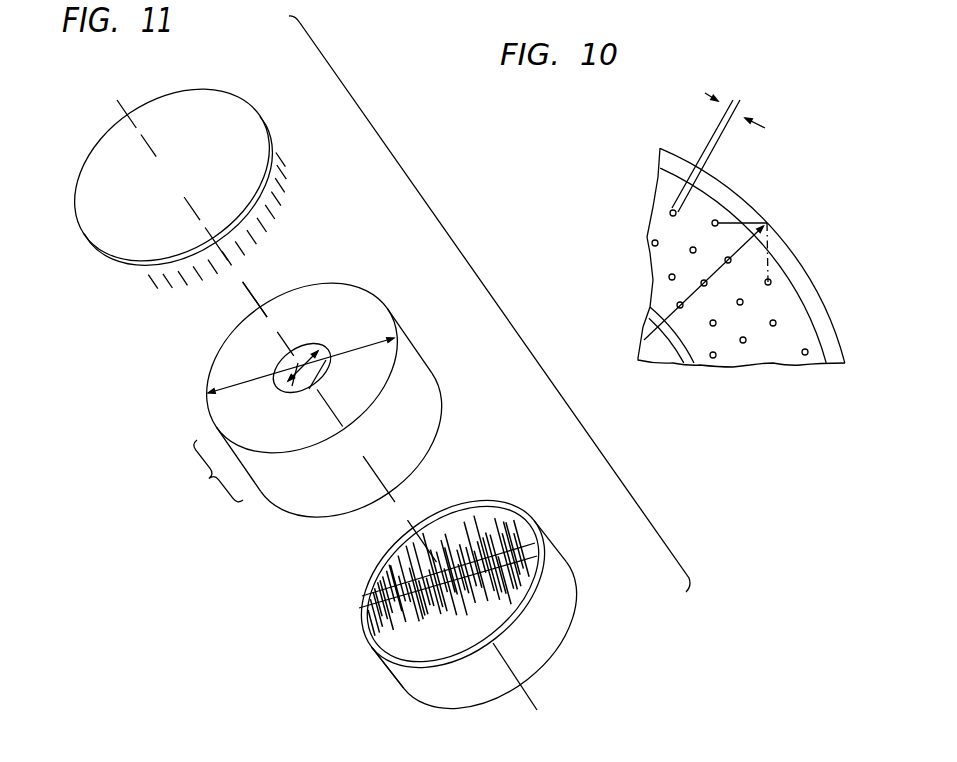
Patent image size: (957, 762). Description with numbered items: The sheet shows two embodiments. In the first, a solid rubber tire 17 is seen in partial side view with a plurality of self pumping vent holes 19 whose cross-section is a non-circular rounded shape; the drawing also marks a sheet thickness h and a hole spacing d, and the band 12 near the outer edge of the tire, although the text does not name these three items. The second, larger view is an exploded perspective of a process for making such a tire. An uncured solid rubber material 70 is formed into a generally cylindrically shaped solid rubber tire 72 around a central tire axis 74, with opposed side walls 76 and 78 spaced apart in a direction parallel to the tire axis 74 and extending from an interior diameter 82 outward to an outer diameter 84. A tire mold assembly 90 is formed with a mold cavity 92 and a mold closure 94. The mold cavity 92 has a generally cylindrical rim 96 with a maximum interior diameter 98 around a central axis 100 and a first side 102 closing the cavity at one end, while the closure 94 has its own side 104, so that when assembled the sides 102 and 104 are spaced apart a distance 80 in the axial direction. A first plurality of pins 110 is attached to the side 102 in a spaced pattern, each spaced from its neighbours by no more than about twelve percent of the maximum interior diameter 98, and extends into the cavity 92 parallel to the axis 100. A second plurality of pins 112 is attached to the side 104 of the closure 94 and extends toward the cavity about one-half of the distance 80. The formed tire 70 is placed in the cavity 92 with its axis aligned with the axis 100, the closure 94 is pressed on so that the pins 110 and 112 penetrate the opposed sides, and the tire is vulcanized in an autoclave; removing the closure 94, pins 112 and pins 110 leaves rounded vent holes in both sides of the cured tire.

In FIG. 10, the peripheral band 12 is at (700, 207).
In FIG. 10, the solid rubber tire 17 is at (743, 229).
In FIG. 10, the self pumping vent holes 19 is at (793, 313).
In FIG. 10, the sheet thickness h is at (744, 119).
In FIG. 10, the perforation spacing d is at (787, 225).
In FIG. 11, the uncured solid rubber material 70 is at (326, 382).
In FIG. 11, the cylindrically shaped solid rubber tire 72 is at (423, 355).
In FIG. 11, the central tire axis 74 is at (240, 285).
In FIG. 11, the side wall 76 is at (430, 434).
In FIG. 11, the side wall 78 is at (337, 290).
In FIG. 11, the distance 80 is at (210, 471).
In FIG. 11, the interior diameter 82 is at (312, 350).
In FIG. 11, the outer diameter 84 is at (242, 395).
In FIG. 11, the tire mold assembly 90 is at (512, 321).
In FIG. 11, the mold cavity 92 is at (440, 588).
In FIG. 11, the mold closure 94 is at (273, 168).
In FIG. 11, the cylindrical rim 96 is at (390, 563).
In FIG. 11, the maximum interior diameter 98 is at (367, 593).
In FIG. 11, the central axis 100 is at (117, 108).
In FIG. 11, the first side 102 is at (377, 652).
In FIG. 11, the side of the mold closure 104 is at (126, 278).
In FIG. 11, the first plurality of pins 110 is at (517, 498).
In FIG. 11, the second plurality of pins 112 is at (273, 193).